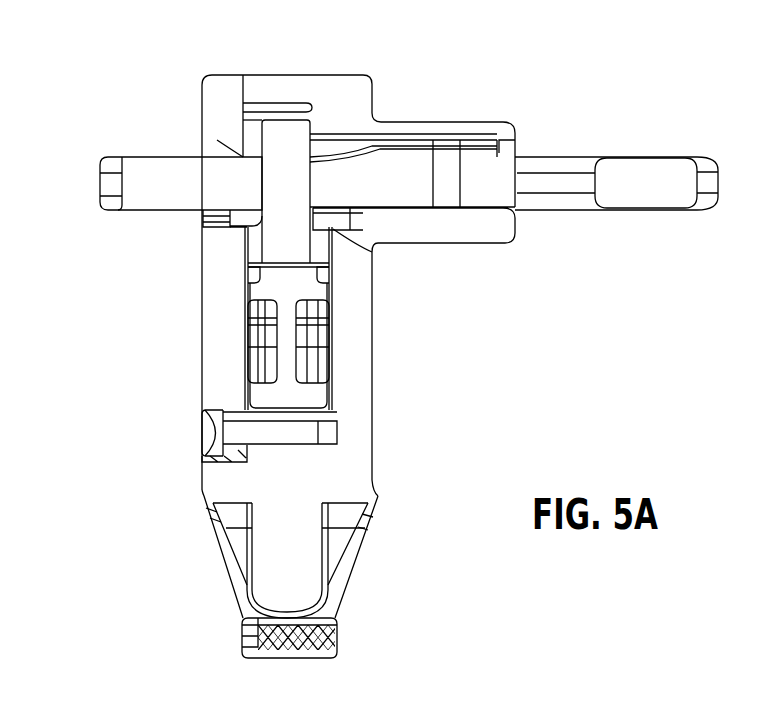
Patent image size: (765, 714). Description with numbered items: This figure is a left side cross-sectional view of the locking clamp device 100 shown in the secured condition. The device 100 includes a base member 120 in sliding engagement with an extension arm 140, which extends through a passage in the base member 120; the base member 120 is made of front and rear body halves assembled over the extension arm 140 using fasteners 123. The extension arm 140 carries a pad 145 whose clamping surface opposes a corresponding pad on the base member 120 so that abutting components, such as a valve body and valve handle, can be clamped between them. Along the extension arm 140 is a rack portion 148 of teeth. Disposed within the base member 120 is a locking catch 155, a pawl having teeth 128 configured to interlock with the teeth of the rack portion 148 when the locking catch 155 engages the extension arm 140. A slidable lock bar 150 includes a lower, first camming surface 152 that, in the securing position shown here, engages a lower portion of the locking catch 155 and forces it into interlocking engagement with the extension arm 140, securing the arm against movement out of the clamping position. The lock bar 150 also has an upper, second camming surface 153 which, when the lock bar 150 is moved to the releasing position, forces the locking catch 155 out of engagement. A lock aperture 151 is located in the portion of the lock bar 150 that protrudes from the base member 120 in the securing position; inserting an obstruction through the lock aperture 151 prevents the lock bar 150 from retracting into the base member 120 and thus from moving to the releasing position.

The device 100 is at (658, 108).
The base member 120 is at (352, 347).
The fasteners 123 is at (203, 432).
The teeth 128 is at (330, 260).
The extension arm 140 is at (287, 397).
The pad 145 is at (242, 650).
The rack portion 148 is at (258, 270).
The lock bar 150 is at (165, 177).
The lock aperture 151 is at (543, 172).
The camming surface 152 is at (378, 246).
The second camming surface 153 is at (400, 142).
The locking catch 155 is at (291, 147).